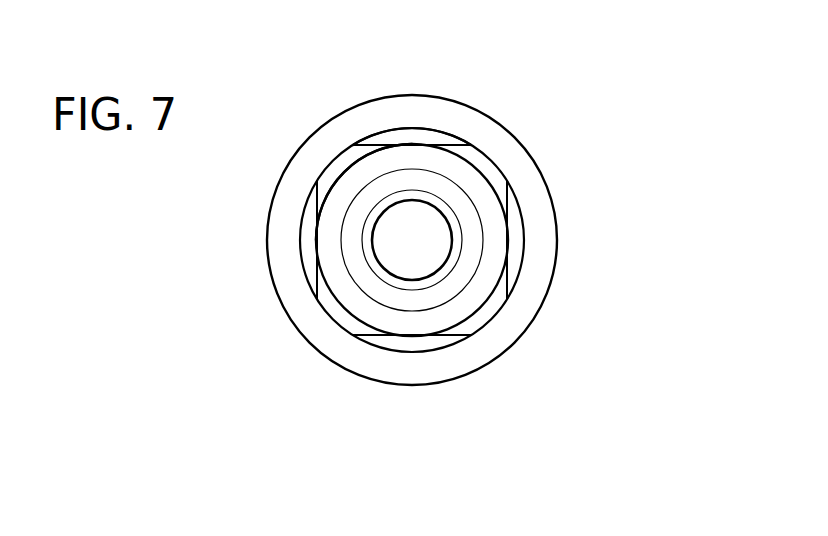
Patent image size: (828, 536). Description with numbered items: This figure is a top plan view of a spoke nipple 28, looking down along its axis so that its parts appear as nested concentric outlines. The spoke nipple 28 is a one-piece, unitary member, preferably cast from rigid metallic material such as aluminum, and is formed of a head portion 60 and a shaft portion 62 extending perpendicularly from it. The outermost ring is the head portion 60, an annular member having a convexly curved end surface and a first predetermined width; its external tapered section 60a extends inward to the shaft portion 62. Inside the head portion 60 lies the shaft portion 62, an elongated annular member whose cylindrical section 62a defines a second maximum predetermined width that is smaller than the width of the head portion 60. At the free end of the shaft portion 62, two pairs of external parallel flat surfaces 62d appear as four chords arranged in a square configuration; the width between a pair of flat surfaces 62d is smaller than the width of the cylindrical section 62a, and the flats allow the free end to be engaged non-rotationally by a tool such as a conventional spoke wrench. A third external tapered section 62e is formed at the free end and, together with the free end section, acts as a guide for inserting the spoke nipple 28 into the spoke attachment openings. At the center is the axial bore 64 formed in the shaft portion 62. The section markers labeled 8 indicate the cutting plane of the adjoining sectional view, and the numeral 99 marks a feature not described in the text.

The spoke nipple 28 is at (558, 122).
The head portion 60 is at (548, 311).
The external tapered section 60a is at (525, 178).
The shaft portion 62 is at (470, 351).
The cylindrical section 62a is at (423, 133).
The external parallel flat surfaces 62d is at (400, 145).
The third external tapered section 62e is at (343, 170).
The axial bore 64 is at (392, 257).
The inner sleeve 99 is at (368, 282).
The section line 8- 8 is at (250, 236).